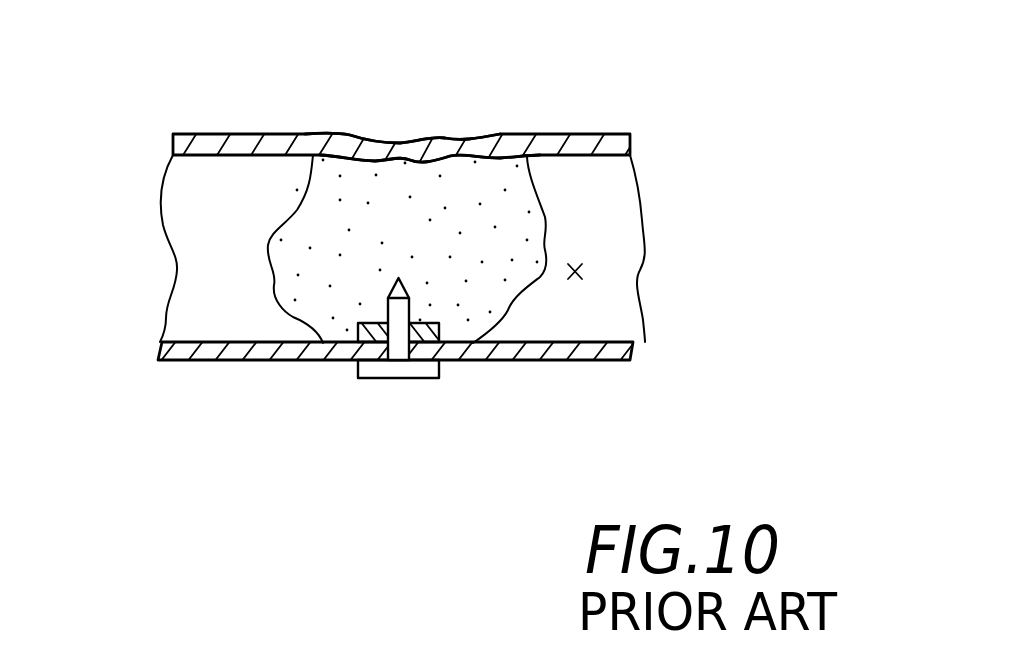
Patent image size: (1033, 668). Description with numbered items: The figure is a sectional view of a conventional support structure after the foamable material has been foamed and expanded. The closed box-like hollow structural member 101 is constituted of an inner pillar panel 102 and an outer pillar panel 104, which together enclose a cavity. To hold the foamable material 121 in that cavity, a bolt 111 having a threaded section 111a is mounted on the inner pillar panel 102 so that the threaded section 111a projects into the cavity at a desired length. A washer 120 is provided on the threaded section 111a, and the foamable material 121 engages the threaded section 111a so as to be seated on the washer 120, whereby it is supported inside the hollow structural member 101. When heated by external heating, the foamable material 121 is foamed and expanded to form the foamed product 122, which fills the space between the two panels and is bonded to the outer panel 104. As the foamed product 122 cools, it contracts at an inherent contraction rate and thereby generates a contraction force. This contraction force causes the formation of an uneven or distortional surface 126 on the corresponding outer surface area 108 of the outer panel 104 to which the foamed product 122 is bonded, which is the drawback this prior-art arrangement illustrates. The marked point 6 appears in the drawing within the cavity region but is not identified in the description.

The hollow structural member 101 is at (432, 248).
The outer pillar panel 104 is at (260, 143).
The outer surface area 108 is at (373, 134).
The distortional surface 126 is at (438, 137).
The inner pillar panel 102 is at (232, 360).
The foamed product 122 is at (548, 249).
The foamable material 121 is at (520, 240).
The washer 120 is at (438, 328).
The bolt 111 is at (223, 383).
The threaded section 111a is at (392, 306).
The void / gap 6 is at (583, 270).